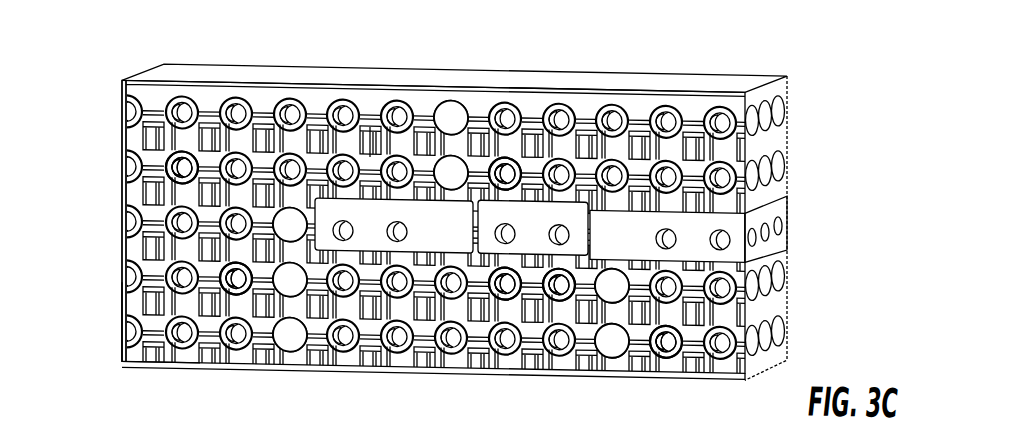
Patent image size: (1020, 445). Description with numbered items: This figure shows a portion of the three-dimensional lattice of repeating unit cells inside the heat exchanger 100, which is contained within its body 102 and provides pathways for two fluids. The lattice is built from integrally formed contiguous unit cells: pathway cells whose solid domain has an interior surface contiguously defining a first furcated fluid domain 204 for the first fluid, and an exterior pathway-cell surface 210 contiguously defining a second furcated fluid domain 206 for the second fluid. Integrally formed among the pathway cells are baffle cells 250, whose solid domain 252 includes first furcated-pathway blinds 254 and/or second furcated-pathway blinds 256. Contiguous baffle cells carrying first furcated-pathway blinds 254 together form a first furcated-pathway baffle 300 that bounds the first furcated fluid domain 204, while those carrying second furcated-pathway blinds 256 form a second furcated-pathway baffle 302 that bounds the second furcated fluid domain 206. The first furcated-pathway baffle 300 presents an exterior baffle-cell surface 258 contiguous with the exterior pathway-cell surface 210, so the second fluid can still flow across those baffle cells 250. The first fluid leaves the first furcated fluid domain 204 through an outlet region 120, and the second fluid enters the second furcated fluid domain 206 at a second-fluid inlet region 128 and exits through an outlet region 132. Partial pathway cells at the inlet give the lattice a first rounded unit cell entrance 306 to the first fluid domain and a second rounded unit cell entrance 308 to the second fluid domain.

The heat exchanger 100 is at (758, 44).
The body 102 is at (581, 55).
The outlet region 120 is at (670, 349).
The second-fluid inlet region 128 is at (768, 297).
The outlet region 132 is at (778, 125).
The first furcated fluid domain 204 is at (290, 111).
The second furcated fluid domain 206 is at (372, 135).
The exterior pathway-cell surface 210 is at (157, 207).
The baffle cells 250 is at (586, 227).
The solid domain 252 is at (790, 197).
The first furcated-pathway blinds 254 is at (450, 106).
The second furcated-pathway blinds 256 is at (790, 222).
The exterior baffle-cell surface 258 is at (218, 201).
The first furcated-pathway baffle 300 is at (482, 169).
The second furcated-pathway baffle 302 is at (533, 300).
The first rounded unit cell entrance 306 is at (110, 321).
The second rounded unit cell entrance 308 is at (802, 297).